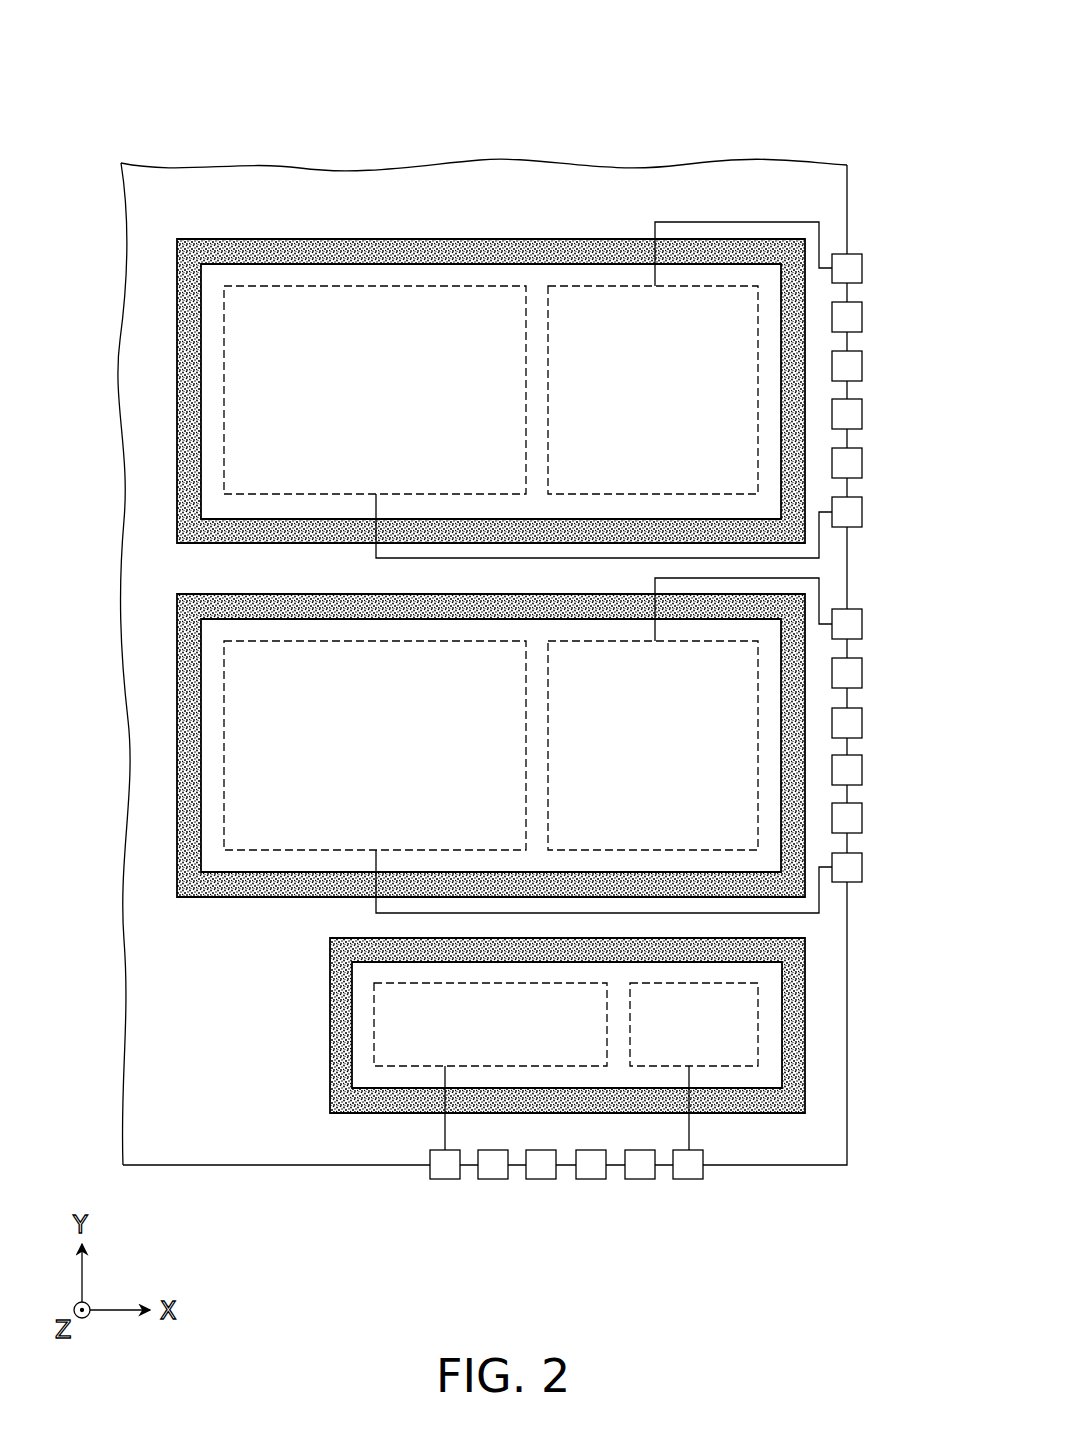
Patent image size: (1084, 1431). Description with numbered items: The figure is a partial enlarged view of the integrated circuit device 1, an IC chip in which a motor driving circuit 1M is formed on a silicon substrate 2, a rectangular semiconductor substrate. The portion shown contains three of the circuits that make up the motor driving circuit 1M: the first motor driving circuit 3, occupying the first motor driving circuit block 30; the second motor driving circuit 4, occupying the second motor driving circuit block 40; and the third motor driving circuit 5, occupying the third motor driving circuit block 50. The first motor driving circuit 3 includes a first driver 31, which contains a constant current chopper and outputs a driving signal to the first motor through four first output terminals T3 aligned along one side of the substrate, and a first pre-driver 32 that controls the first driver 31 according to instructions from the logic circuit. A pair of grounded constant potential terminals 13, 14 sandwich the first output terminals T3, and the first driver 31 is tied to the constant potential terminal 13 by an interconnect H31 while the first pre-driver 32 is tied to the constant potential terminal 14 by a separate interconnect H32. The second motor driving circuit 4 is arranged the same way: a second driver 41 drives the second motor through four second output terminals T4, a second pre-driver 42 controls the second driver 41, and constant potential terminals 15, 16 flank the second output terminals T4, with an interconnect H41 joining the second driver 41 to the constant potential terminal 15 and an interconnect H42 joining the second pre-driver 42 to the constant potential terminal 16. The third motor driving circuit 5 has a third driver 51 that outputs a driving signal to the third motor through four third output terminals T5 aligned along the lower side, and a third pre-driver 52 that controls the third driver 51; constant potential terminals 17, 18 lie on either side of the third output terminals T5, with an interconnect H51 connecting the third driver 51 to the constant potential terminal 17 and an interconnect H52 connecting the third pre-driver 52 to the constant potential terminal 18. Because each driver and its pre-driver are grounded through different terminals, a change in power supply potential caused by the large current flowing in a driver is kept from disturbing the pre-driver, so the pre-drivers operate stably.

The integrated circuit device 1 is at (143, 116).
The motor driving circuit 1M is at (280, 203).
The silicon substrate 2 is at (160, 210).
The first motor driving circuit 3 is at (424, 391).
The first motor driving circuit block 30 is at (193, 420).
The first driver 31 is at (671, 404).
The first pre-driver 32 is at (388, 404).
The second motor driving circuit 4 is at (424, 745).
The second motor driving circuit block 40 is at (193, 743).
The second driver 41 is at (671, 761).
The second pre-driver 42 is at (384, 761).
The third motor driving circuit 5 is at (424, 1025).
The third motor driving circuit block 50 is at (345, 1055).
The third driver 51 is at (711, 1039).
The third pre-driver 52 is at (508, 1039).
The constant potential terminal 13 is at (851, 268).
The constant potential terminal 14 is at (851, 512).
The constant potential terminal 15 is at (851, 624).
The constant potential terminal 16 is at (851, 867).
The constant potential terminal 17 is at (688, 1165).
The constant potential terminal 18 is at (445, 1165).
The first output terminals T3 is at (849, 317).
The second output terminals T4 is at (849, 673).
The third output terminals T5 is at (493, 1165).
The interconnect H31 is at (750, 222).
The interconnect H32 is at (490, 558).
The interconnect H41 is at (819, 592).
The interconnect H42 is at (819, 895).
The interconnect H51 is at (689, 1125).
The interconnect H52 is at (445, 1125).